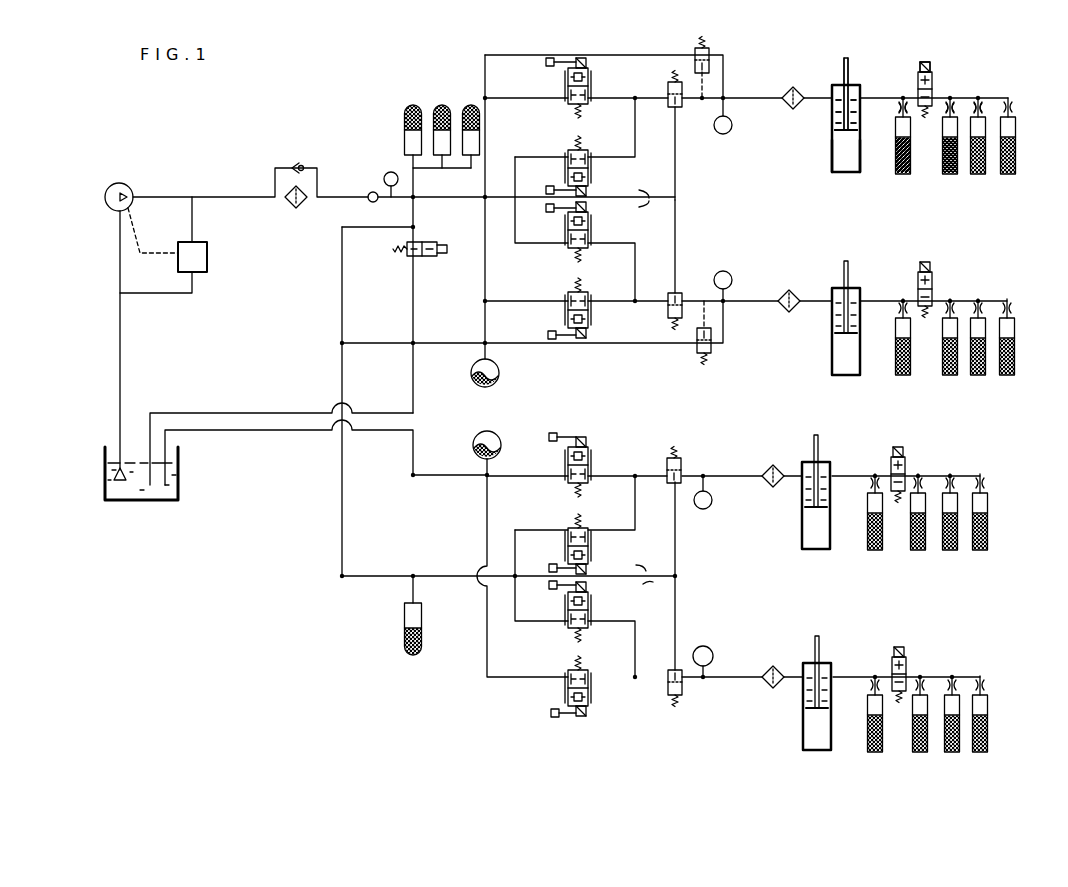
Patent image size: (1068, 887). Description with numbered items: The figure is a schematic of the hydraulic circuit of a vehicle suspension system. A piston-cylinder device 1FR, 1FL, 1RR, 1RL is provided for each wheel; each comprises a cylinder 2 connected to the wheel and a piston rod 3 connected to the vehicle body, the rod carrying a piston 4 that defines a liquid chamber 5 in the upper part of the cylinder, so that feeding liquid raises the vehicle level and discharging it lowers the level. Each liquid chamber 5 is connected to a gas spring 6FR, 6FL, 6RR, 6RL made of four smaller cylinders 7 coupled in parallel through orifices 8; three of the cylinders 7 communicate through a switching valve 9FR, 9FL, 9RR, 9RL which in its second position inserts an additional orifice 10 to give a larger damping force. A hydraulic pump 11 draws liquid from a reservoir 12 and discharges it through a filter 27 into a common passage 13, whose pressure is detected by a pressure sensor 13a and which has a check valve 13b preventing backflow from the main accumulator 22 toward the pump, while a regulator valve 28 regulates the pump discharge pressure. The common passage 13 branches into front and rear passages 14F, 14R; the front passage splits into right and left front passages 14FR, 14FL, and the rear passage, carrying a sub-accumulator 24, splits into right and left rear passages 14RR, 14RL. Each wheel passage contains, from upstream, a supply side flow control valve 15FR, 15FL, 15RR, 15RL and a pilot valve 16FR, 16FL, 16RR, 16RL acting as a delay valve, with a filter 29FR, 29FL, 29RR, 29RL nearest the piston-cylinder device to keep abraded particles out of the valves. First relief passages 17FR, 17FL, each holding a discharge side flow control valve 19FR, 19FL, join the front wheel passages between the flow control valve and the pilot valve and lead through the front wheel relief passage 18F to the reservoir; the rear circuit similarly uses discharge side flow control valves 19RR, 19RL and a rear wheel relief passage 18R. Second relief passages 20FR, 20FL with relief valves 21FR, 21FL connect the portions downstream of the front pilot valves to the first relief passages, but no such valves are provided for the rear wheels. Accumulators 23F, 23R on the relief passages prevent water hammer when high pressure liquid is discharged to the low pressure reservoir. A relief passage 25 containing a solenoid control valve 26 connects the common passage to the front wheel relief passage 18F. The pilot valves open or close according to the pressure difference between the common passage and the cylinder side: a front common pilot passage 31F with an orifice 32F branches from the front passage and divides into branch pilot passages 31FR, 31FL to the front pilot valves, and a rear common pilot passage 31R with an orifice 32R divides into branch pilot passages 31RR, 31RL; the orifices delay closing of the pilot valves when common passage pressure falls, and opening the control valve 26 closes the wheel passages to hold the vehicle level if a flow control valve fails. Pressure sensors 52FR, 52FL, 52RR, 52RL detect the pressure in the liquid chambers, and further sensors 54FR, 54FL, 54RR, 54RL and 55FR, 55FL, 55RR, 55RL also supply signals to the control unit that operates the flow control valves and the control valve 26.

The right front wheel piston-cylinder device 1FR is at (818, 150).
The left front wheel piston-cylinder device 1FL is at (823, 359).
The right rear wheel piston-cylinder device 1RR is at (790, 537).
The left rear wheel piston-cylinder device 1RL is at (795, 732).
The cylinder 2 is at (862, 166).
The piston rod 3 is at (852, 68).
The piston 4 is at (854, 134).
The liquid chamber 5 is at (867, 80).
The right front gas spring 6FR is at (963, 193).
The left front gas spring 6FL is at (952, 381).
The right rear gas spring 6RR is at (938, 565).
The left rear gas spring 6RL is at (933, 754).
The cylinder 7 is at (910, 163).
The orifice 8 is at (897, 108).
The right front switching valve 9FR is at (937, 73).
The left front switching valve 9FL is at (946, 275).
The right rear switching valve 9RR is at (903, 465).
The left rear switching valve 9RL is at (907, 658).
The orifice 10 is at (918, 77).
The hydraulic pump 11 is at (110, 207).
The reservoir 12 is at (103, 455).
The common passage 13 is at (348, 193).
The pressure sensor 13a is at (383, 173).
The check valve 13b is at (373, 203).
The front passage 14F is at (458, 203).
The rear passage 14R is at (340, 262).
The right front passage 14FR is at (635, 123).
The left front passage 14FL is at (628, 236).
The right rear passage 14RR is at (743, 475).
The left rear passage 14RL is at (620, 606).
The supply side flow control valve 15FR is at (590, 174).
The supply side flow control valve 15FL is at (592, 226).
The supply side flow control valve 15RR is at (592, 553).
The supply side flow control valve 15RL is at (593, 602).
The pilot valve 16FR is at (677, 111).
The pilot valve 16FL is at (681, 293).
The pilot valve 16RR is at (682, 462).
The pilot valve 16RL is at (683, 698).
The first relief passage 17FR is at (516, 100).
The first relief passage 17FL is at (527, 300).
The front wheel relief passage 18F is at (303, 412).
The rear wheel relief passage 18R is at (297, 432).
The discharge side flow control valve 19FR is at (588, 84).
The discharge side flow control valve 19FL is at (592, 318).
The discharge side flow control valve 19RR is at (590, 450).
The discharge side flow control valve 19RL is at (595, 713).
The second relief passage 20FR is at (543, 58).
The second relief passage 20FL is at (621, 345).
The relief valve 21FR is at (718, 51).
The relief valve 21FL is at (712, 355).
The main accumulator 22 is at (430, 102).
The accumulator 23F is at (500, 373).
The accumulator 23R is at (500, 435).
The sub-accumulator 24 is at (427, 643).
The relief passage 25 is at (412, 288).
The control valve 26 is at (405, 260).
The filter 27 is at (287, 205).
The regulator valve 28 is at (207, 262).
The filter 29FR is at (800, 85).
The filter 29FL is at (787, 313).
The filter 29RR is at (770, 488).
The filter 29RL is at (780, 663).
The front common pilot passage 31F is at (536, 203).
The rear common pilot passage 31R is at (543, 583).
The branch pilot passage 31FR is at (675, 170).
The branch pilot passage 31FL is at (675, 225).
The branch pilot passage 31RR is at (677, 547).
The branch pilot passage 31RL is at (678, 617).
The orifice 32F is at (655, 191).
The orifice 32R is at (627, 570).
The pressure sensor 52FR is at (732, 125).
The pressure sensor 52FL is at (727, 278).
The pressure sensor 52RR is at (711, 498).
The pressure sensor 52RL is at (710, 650).
The sensor 54FR is at (547, 59).
The sensor 54FL is at (552, 330).
The sensor 54RR is at (559, 433).
The sensor 54RL is at (550, 714).
The sensor 55FR is at (549, 186).
The sensor 55FL is at (546, 206).
The sensor 55RR is at (548, 563).
The sensor 55RL is at (554, 593).